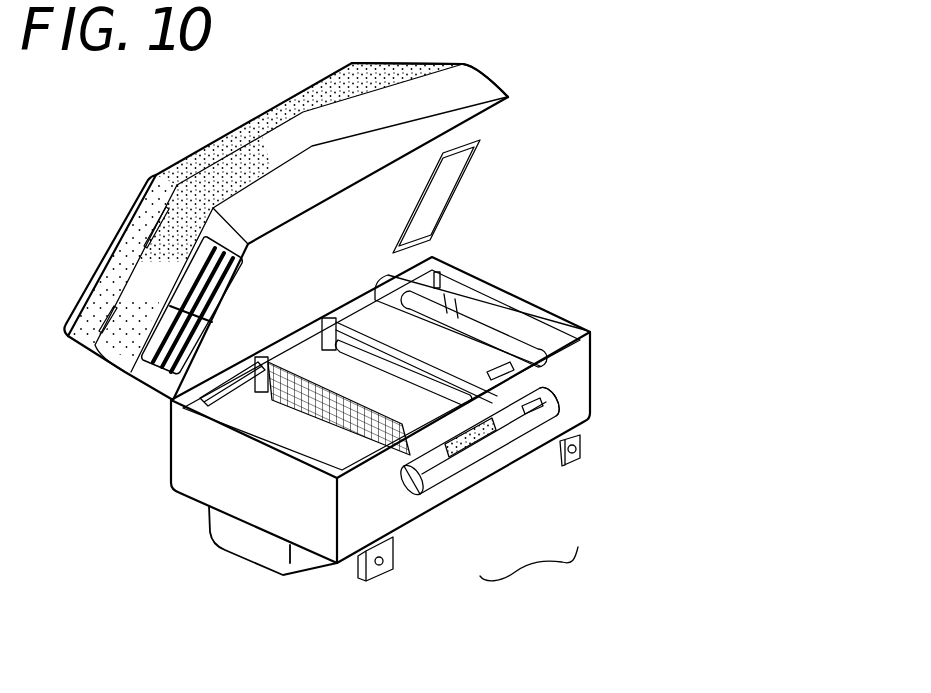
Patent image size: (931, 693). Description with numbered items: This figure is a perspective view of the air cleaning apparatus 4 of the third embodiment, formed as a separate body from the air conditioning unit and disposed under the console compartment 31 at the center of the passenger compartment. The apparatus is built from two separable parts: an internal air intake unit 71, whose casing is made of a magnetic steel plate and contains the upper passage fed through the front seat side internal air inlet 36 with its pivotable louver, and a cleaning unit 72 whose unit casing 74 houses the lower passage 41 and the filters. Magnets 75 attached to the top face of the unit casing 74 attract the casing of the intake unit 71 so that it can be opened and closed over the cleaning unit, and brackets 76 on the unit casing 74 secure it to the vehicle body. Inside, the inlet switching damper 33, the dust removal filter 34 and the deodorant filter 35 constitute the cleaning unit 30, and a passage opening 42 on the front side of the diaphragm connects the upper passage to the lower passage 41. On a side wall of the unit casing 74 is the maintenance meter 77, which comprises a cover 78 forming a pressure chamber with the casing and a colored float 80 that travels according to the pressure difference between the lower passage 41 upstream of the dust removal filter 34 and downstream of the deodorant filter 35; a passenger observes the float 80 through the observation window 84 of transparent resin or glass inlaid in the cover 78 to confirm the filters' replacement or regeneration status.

The air cleaning apparatus 4 is at (519, 78).
The cleaning unit 30 is at (529, 574).
The console compartment 31 is at (399, 64).
The inlet switching damper 33 is at (493, 320).
The dust removal filter 34 is at (535, 410).
The deodorant filter 35 is at (481, 374).
The front seat side internal air inlet 36 is at (157, 368).
The lower passage 41 is at (242, 411).
The passage opening 42 is at (440, 192).
The internal air intake unit 71 is at (482, 68).
The cleaning unit 72 is at (600, 400).
The unit casing 74 is at (242, 502).
The magnets 75 is at (436, 270).
The brackets 76 is at (584, 457).
The maintenance meter 77 is at (433, 492).
The cover 78 is at (552, 403).
The float 80 is at (463, 455).
The observation window 84 is at (530, 411).